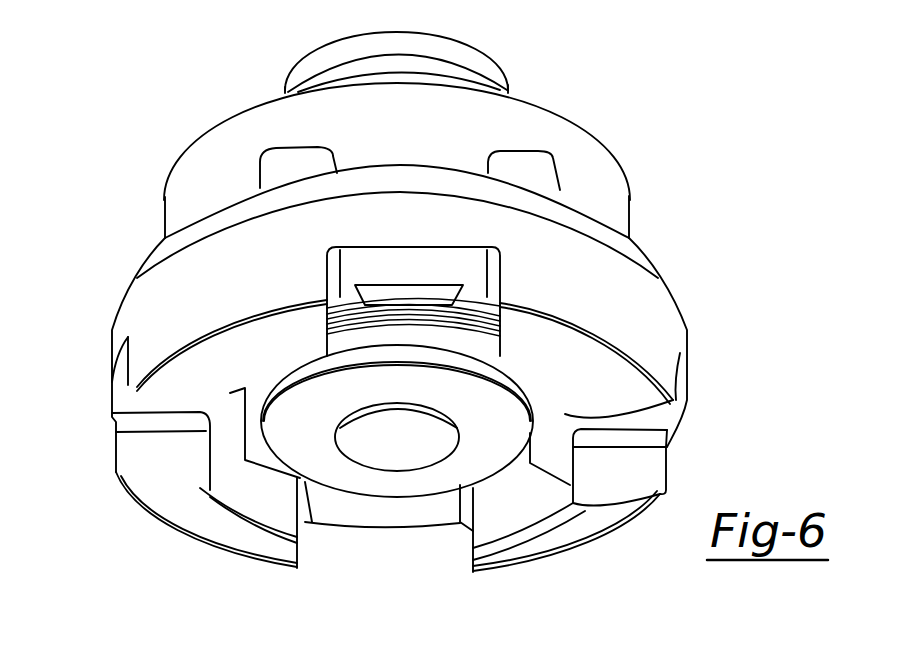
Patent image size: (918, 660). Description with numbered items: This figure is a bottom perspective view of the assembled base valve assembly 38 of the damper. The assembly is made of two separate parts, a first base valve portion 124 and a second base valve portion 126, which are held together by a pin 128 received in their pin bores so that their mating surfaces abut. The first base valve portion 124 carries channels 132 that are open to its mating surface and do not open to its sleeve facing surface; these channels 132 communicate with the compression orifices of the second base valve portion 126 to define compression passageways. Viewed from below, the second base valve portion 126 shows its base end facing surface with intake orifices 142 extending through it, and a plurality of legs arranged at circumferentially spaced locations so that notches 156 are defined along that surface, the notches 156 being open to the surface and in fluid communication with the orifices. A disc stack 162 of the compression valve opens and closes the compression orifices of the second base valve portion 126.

The base valve assembly 38 is at (708, 126).
The first base valve portion 124 is at (608, 209).
The second base valve portion 126 is at (650, 318).
The pin 128 is at (480, 66).
The channels 132 is at (291, 167).
The intake orifices 142 is at (386, 301).
The notches 156 is at (444, 254).
The disc stack 162 is at (442, 338).